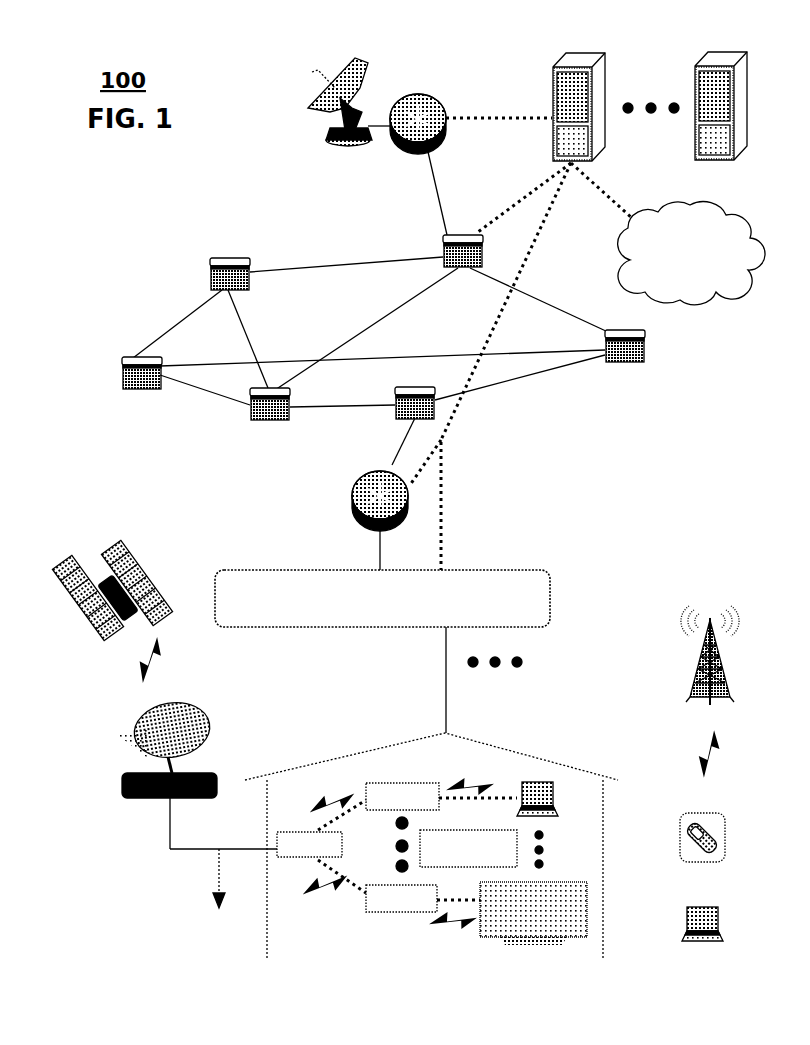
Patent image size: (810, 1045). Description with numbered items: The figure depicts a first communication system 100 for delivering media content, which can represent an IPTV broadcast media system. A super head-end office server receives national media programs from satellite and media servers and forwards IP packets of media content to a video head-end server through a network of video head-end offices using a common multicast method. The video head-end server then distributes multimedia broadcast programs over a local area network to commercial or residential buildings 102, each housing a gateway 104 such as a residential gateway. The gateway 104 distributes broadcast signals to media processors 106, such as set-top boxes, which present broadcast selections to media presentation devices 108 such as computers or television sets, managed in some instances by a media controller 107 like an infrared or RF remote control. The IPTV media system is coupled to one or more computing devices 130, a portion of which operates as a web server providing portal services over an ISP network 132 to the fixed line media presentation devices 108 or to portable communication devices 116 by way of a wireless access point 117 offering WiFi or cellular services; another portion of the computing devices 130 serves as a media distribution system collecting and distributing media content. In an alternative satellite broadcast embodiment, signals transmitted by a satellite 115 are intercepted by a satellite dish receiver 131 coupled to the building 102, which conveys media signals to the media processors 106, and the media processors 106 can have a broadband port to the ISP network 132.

The communication system 100 is at (404, 510).
The computing devices 130 is at (724, 58).
The ISP network 132 is at (475, 595).
The satellite 115 is at (72, 598).
The satellite dish receiver 131 is at (150, 778).
The buildings 102 is at (431, 857).
The gateway 104 is at (309, 844).
The media processors 106 is at (402, 847).
The media controller 107 is at (468, 848).
The media presentation devices 108 is at (545, 782).
The wireless access point 117 is at (720, 605).
The portable communication devices 116 is at (725, 825).